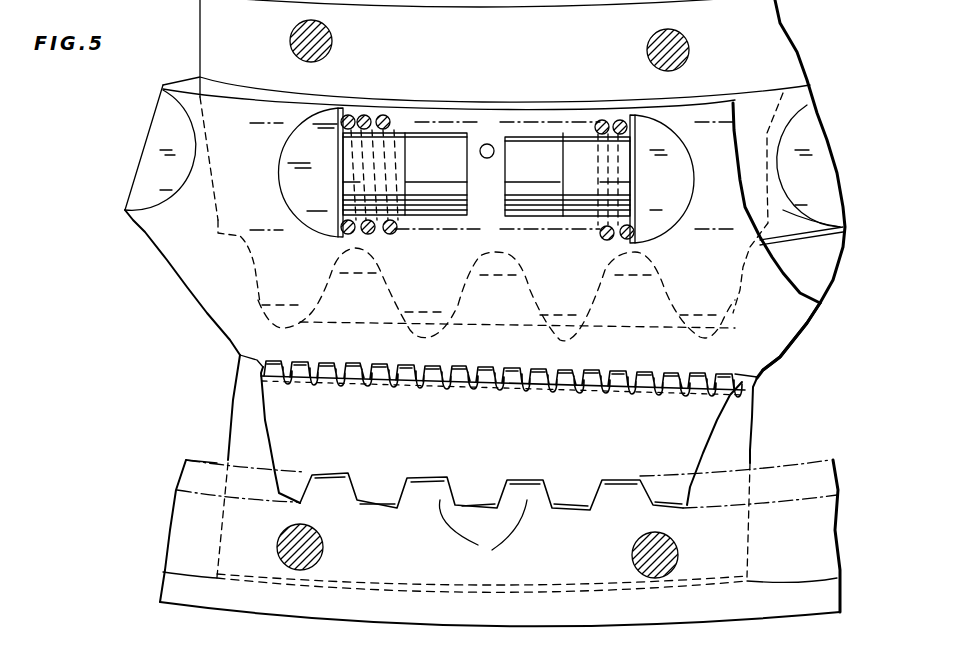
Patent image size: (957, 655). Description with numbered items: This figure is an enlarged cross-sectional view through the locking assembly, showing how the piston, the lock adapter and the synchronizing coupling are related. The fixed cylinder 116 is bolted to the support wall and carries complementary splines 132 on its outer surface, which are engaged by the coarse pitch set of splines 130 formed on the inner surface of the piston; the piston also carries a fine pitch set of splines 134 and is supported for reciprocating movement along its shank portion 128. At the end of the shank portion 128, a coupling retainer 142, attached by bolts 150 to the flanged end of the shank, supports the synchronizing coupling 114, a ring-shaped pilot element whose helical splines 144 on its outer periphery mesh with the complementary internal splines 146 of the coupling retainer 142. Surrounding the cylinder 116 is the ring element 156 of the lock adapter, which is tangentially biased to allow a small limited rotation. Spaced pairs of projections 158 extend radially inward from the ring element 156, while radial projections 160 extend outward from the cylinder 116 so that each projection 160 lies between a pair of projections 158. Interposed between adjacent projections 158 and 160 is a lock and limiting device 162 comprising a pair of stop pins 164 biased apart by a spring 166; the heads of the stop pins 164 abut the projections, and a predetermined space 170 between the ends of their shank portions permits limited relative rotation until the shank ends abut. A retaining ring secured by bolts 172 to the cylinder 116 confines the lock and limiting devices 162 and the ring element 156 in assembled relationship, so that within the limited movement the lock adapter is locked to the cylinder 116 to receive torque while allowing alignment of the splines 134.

The synchronizing coupling 114 is at (729, 407).
The cylinder 116 is at (792, 22).
The shank portion 128 is at (753, 430).
The coarse pitch set of splines 130 is at (503, 373).
The complementary splines 132 is at (700, 293).
The fine pitch set of splines 134 is at (757, 375).
The coupling retainer 142 is at (797, 615).
The helical splines 144 is at (663, 490).
The internal splines 146 is at (483, 541).
The bolts 150 is at (322, 546).
The ring element 156 is at (790, 318).
The projections 158 is at (207, 177).
The radial projections 160 is at (783, 210).
The lock and limiting device 162 is at (422, 125).
The stop pins 164 is at (293, 143).
The spring 166 is at (532, 125).
The predetermined space 170 is at (490, 184).
The bolts 172 is at (290, 36).